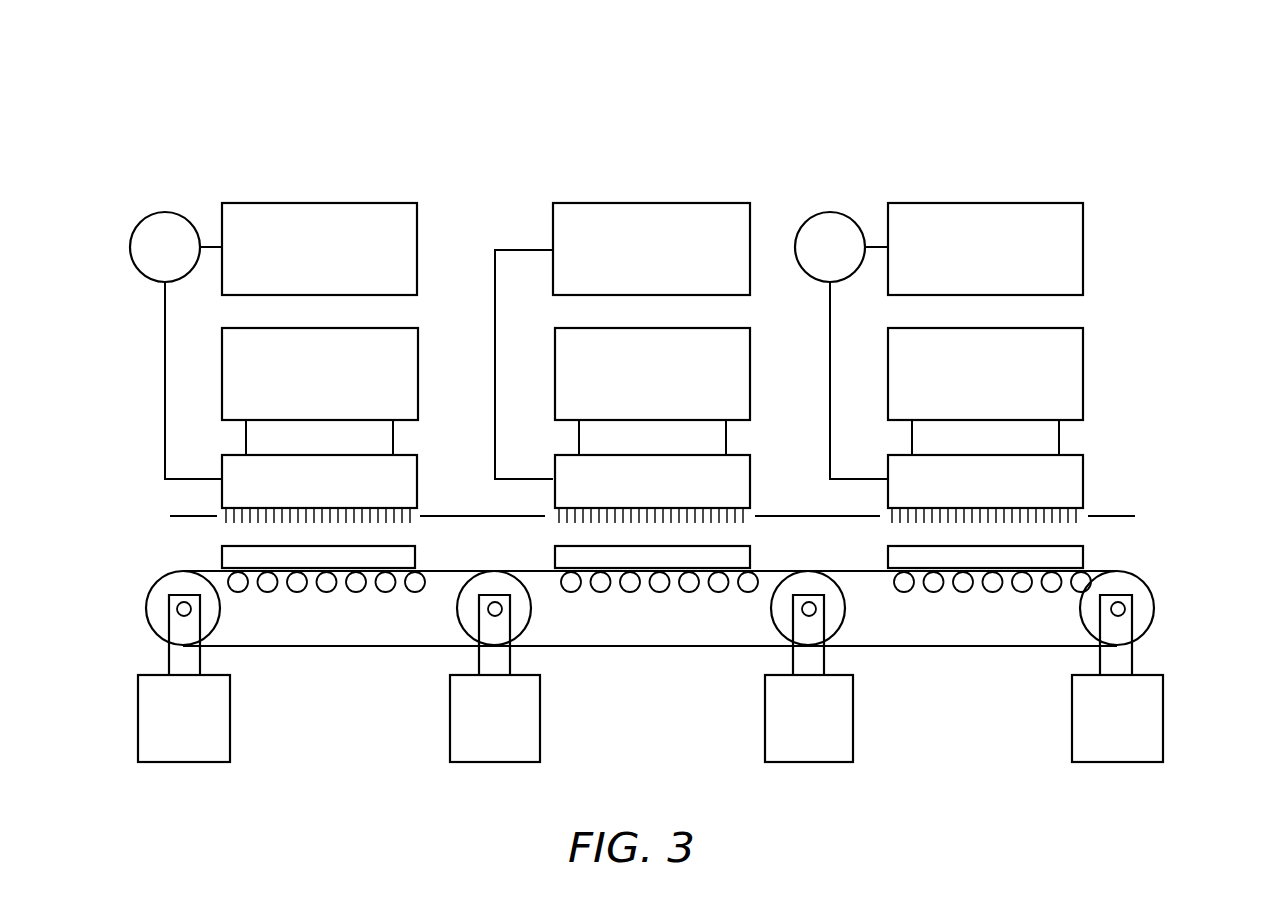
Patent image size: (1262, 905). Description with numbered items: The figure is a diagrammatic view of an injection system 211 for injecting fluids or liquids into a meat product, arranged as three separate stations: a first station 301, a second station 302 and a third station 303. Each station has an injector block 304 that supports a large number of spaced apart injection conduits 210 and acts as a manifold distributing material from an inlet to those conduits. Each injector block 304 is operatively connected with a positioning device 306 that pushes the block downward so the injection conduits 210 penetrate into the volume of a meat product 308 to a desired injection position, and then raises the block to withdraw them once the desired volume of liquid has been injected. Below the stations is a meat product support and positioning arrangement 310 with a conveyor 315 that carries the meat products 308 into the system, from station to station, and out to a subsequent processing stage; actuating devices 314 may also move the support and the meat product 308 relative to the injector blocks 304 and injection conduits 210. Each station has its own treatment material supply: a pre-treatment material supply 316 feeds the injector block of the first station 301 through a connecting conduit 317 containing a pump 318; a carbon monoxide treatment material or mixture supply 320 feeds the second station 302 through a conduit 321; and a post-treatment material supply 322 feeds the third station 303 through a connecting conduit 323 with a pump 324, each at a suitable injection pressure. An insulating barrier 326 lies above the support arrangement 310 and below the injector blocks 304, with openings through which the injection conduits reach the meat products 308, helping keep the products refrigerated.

The first station 301 is at (197, 125).
The second station 302 is at (629, 125).
The third station 303 is at (957, 125).
The pre-treatment material supply 316 is at (308, 203).
The pump 318 is at (165, 211).
The connecting conduit 317 is at (164, 362).
The carbon monoxide treatment material or mixture supply 320 is at (641, 203).
The conduit 321 is at (494, 362).
The post-treatment material supply 322 is at (975, 203).
The pump 324 is at (830, 211).
The connecting conduit 323 is at (829, 362).
The positioning device 306 is at (335, 412).
The injector block 304 is at (222, 465).
The injection conduits 210 is at (225, 520).
The meat product 308 is at (418, 550).
The insulating barrier 326 is at (1124, 506).
The meat product support and positioning arrangement 310 is at (150, 569).
The conveyor 315 is at (1172, 645).
The actuating devices 314 is at (232, 715).
The injection system 211 is at (228, 843).